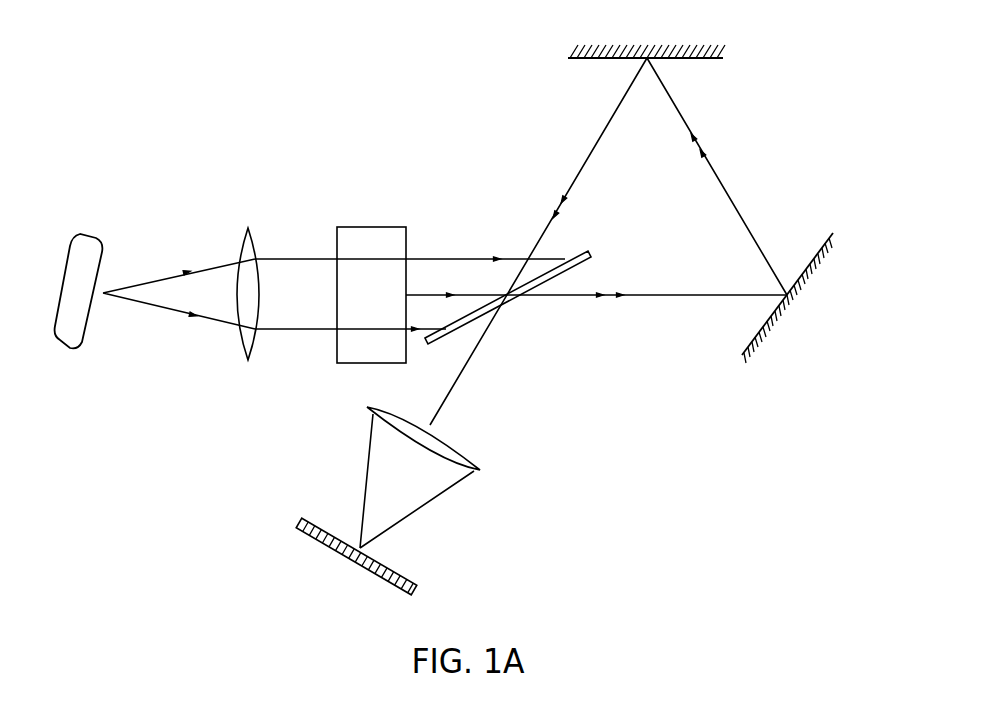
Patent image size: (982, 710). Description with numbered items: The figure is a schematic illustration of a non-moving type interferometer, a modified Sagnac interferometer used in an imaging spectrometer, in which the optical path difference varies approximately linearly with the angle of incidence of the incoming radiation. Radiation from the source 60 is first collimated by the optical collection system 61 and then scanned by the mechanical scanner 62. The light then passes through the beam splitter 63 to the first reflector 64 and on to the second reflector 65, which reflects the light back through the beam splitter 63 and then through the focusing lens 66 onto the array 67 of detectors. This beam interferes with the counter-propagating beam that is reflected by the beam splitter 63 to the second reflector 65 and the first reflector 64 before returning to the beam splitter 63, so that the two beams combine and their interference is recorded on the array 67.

The source 60 is at (100, 238).
The optical collection system 61 is at (256, 250).
The mechanical scanner 62 is at (407, 243).
The beam splitter 63 is at (590, 252).
The first reflector 64 is at (748, 340).
The second reflector 65 is at (598, 62).
The focusing lens 66 is at (397, 413).
The array of detectors 67 is at (326, 520).